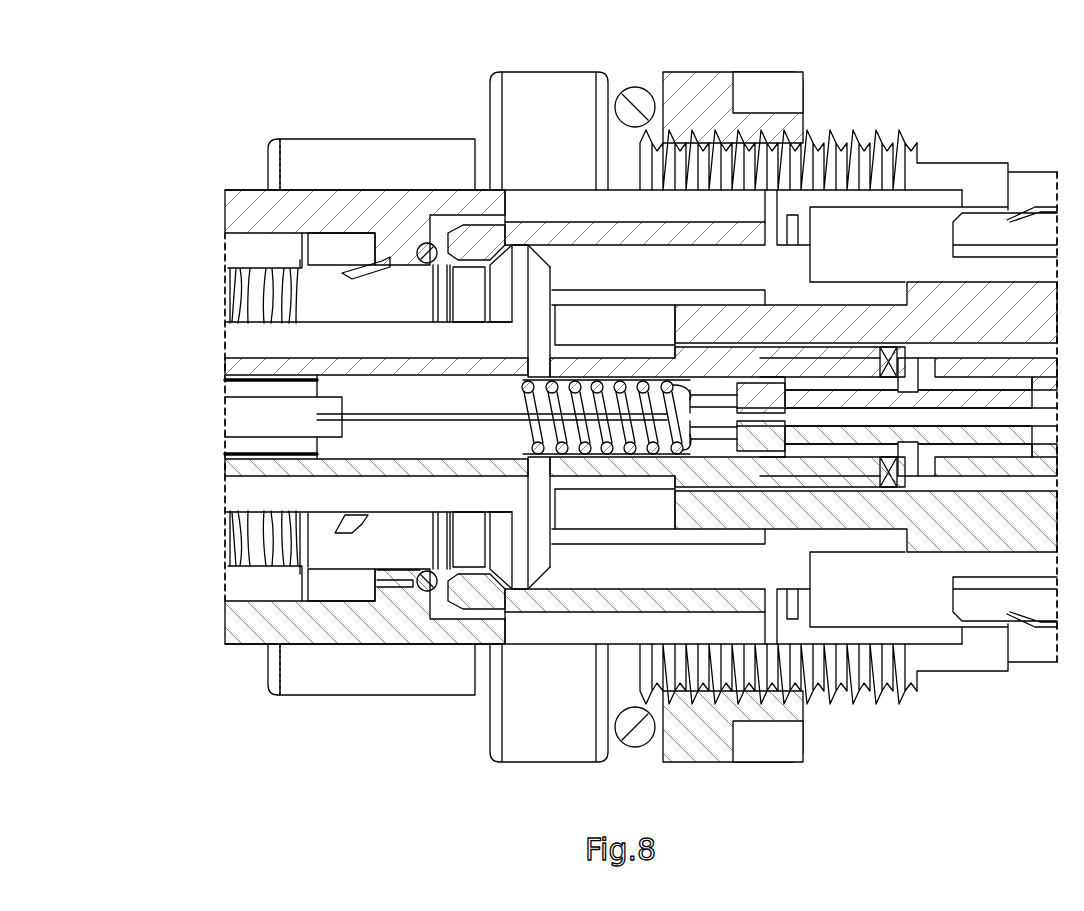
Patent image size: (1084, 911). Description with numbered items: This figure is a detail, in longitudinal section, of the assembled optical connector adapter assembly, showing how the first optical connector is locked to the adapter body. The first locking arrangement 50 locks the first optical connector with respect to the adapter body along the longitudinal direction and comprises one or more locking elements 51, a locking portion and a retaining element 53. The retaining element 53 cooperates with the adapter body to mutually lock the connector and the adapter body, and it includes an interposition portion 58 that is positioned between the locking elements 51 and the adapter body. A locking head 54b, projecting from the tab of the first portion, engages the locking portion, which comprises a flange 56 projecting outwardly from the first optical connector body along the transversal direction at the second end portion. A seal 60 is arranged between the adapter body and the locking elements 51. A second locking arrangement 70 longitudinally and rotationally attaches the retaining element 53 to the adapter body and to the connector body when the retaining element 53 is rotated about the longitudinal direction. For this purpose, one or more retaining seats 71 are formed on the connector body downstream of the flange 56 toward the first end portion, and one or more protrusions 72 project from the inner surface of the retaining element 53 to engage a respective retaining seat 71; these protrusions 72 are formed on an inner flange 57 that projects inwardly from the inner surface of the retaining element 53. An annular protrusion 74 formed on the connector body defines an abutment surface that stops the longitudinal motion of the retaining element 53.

The first locking arrangement 50 is at (468, 652).
The locking element 51 is at (650, 232).
The retaining element 53 is at (267, 203).
The locking head 54b is at (475, 230).
The flange 56 is at (522, 250).
The inner flange 57 is at (377, 240).
The interposition portion 58 is at (451, 197).
The seal 60 is at (678, 627).
The second locking arrangement 70 is at (350, 667).
The retaining seat 71 is at (307, 263).
The protrusion 72 is at (317, 378).
The annular protrusion 74 is at (420, 542).